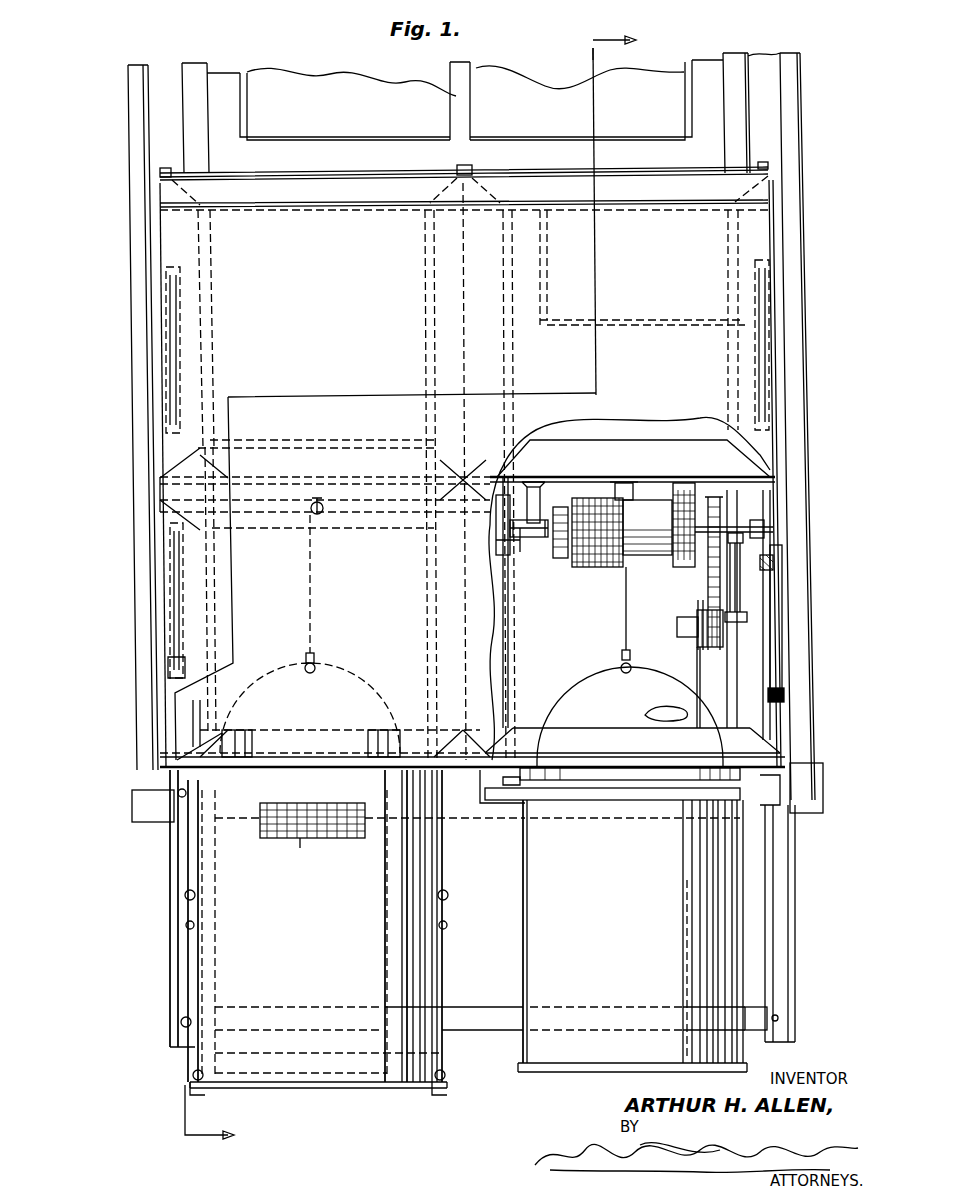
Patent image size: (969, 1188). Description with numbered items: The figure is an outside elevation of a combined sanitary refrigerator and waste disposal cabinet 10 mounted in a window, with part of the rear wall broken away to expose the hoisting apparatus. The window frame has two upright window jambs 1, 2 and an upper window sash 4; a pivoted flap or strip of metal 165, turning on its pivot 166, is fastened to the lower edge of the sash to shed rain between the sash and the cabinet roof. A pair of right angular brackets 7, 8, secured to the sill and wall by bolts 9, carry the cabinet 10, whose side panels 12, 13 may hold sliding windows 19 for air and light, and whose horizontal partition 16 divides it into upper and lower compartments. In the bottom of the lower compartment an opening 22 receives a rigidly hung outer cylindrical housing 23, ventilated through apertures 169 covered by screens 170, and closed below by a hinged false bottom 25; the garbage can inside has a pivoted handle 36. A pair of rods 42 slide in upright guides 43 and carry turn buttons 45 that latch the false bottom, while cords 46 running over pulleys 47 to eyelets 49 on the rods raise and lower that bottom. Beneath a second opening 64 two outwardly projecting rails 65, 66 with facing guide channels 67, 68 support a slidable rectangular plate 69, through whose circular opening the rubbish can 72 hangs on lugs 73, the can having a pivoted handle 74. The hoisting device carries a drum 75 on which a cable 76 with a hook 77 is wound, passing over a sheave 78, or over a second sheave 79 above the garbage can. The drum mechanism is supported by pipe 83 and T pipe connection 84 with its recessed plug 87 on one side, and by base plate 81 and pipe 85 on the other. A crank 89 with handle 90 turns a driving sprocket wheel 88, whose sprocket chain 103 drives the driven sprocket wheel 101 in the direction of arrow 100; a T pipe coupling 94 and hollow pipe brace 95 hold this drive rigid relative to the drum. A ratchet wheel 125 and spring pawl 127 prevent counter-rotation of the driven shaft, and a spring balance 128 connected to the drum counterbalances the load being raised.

The upright window jamb 1 is at (148, 143).
The upright window jamb 2 is at (765, 103).
The upper window sash 4 is at (462, 78).
The right angular bracket 7 is at (176, 907).
The right angular bracket 8 is at (790, 885).
The bolts or fastening means 9 is at (178, 795).
The combined sanitary refrigerator and waste disposal cabinet 10 is at (464, 471).
The side panel 12 is at (162, 505).
The side panel 13 is at (772, 510).
The horizontal partition or panel 16 is at (720, 425).
The window 19 is at (166, 345).
The opening 22 is at (440, 926).
The outer metallic cylindrical shell or housing 23 is at (347, 926).
The false bottom 25 is at (330, 1088).
The handle 36 is at (340, 672).
The rods 42 is at (202, 978).
The upright guides 43 is at (176, 855).
The turn buttons or latch members 45 is at (192, 1090).
The flexible cords, ropes or chains 46 is at (196, 975).
The pulleys or sheaves 47 is at (188, 935).
The eyelets 49 is at (195, 1068).
The second opening 64 is at (600, 768).
The supporting and guide rail 65 is at (442, 770).
The supporting and guide rail 66 is at (778, 785).
The guide channel 67 is at (510, 800).
The guide channel 68 is at (770, 800).
The rectangular supporting plate 69 is at (655, 802).
The rubbish or waste can 72 is at (632, 775).
The lugs 73 is at (530, 782).
The handle 74 is at (590, 690).
The drum 75 is at (650, 498).
The cable or rope 76 is at (310, 608).
The hook 77 is at (622, 660).
The sheave or pulley 78 is at (615, 484).
The sheave 79 is at (322, 512).
The base plate or support 81 is at (773, 529).
The piece of pipe 83 is at (510, 505).
The T pipe connection 84 is at (516, 537).
The pipe 85 is at (765, 522).
The recessed plug 87 is at (520, 545).
The driving sprocket wheel 88 is at (723, 640).
The crank 89 is at (697, 655).
The handle 90 is at (665, 707).
The T pipe coupling 94 is at (747, 617).
The hollow pipe brace 95 is at (740, 588).
The arrow 100 is at (743, 540).
The driven sprocket wheel 101 is at (718, 512).
The sprocket chain 103 is at (710, 567).
The ratchet wheel 125 is at (562, 560).
The spring pawl 127 is at (535, 483).
The spring balance 128 is at (685, 483).
The flap or strip of metal 165 is at (355, 174).
The pivot 166 is at (160, 173).
The apertures 169 is at (295, 798).
The screens 170 is at (312, 830).